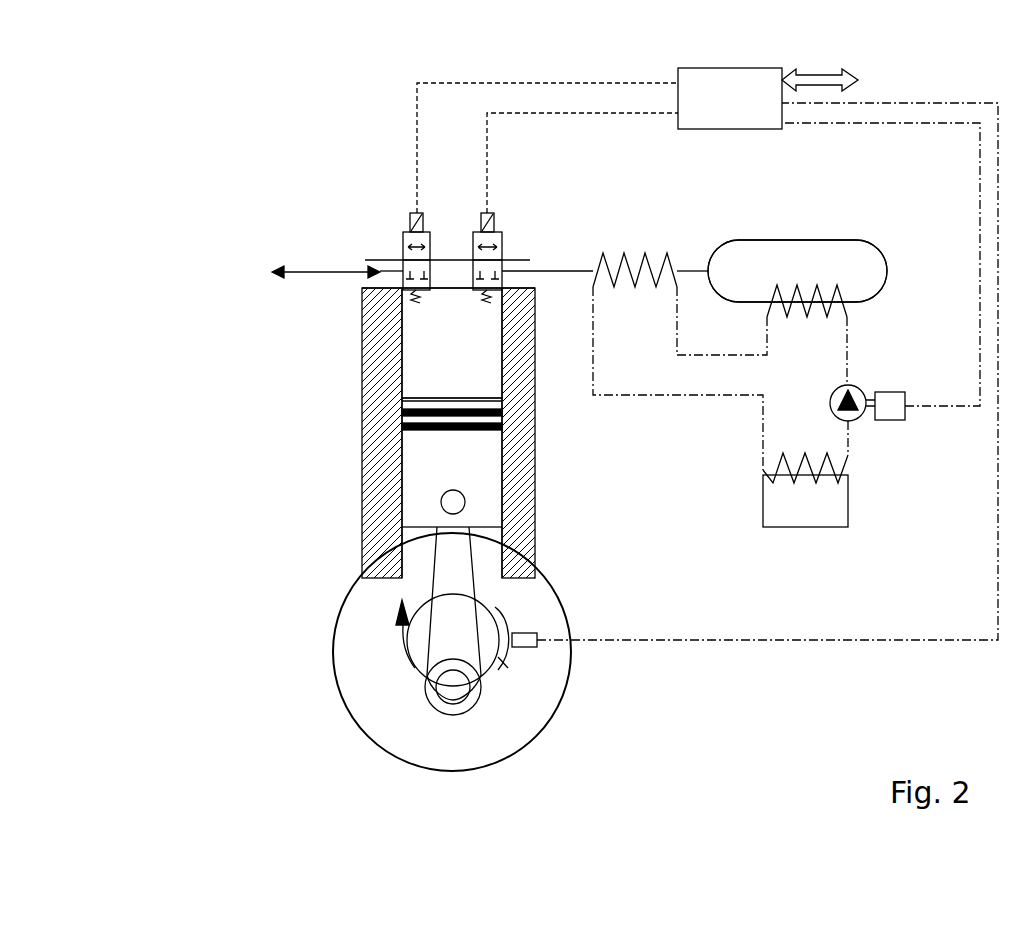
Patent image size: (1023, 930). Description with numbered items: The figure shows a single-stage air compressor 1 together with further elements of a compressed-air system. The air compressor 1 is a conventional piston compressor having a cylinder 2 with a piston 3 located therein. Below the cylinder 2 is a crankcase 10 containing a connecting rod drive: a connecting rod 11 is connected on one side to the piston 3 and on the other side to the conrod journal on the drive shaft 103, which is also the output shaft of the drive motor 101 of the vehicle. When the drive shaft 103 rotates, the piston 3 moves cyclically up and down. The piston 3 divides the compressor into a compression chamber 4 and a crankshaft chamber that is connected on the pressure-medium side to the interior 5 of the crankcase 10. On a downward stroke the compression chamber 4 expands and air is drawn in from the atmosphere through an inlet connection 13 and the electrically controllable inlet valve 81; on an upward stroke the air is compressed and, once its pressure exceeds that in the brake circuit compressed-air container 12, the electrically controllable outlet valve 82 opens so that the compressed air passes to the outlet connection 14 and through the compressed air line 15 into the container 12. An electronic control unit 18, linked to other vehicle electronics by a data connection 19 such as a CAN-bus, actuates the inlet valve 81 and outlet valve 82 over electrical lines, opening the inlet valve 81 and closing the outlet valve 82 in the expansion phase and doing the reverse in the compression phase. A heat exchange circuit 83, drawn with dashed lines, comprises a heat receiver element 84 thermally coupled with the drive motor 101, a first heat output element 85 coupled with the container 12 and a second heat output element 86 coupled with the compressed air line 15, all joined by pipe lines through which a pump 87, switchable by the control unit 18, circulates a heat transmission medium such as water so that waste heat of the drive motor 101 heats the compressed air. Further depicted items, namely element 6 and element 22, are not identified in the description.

The air compressor 1 is at (292, 404).
The cylinder 2 is at (372, 362).
The piston 3 is at (427, 447).
The compression chamber 4 is at (483, 362).
The interior of the crankcase 5 is at (487, 548).
The crankshaft 6 is at (500, 657).
The crankcase 10 is at (337, 609).
The connecting rod 11 is at (447, 553).
The brake circuit compressed-air container 12 is at (888, 273).
The inlet connection 13 is at (373, 278).
The outlet connection 14 is at (530, 271).
The compressed air line 15 is at (712, 252).
The electronic control unit 18 is at (773, 80).
The data connection 19 is at (817, 74).
The crankshaft sensor 22 is at (524, 635).
The electrically controllable inlet valve 81 is at (403, 240).
The electrically controllable outlet valve 82 is at (473, 240).
The heat exchange circuit 83 is at (865, 363).
The heat receiver element 84 is at (850, 457).
The first heat output element 85 is at (847, 313).
The second heat output element 86 is at (663, 257).
The pump 87 is at (831, 408).
The drive motor 101 is at (805, 501).
The drive shaft 103 is at (427, 673).